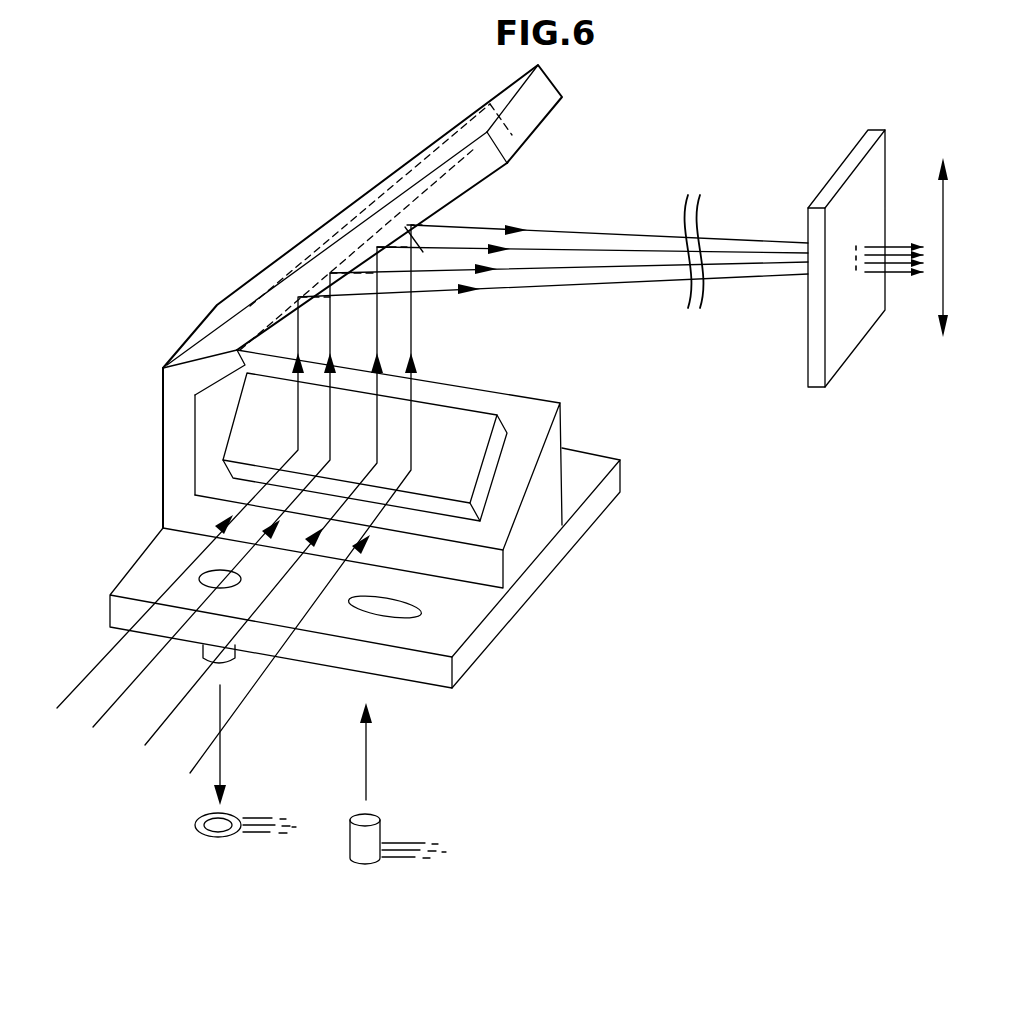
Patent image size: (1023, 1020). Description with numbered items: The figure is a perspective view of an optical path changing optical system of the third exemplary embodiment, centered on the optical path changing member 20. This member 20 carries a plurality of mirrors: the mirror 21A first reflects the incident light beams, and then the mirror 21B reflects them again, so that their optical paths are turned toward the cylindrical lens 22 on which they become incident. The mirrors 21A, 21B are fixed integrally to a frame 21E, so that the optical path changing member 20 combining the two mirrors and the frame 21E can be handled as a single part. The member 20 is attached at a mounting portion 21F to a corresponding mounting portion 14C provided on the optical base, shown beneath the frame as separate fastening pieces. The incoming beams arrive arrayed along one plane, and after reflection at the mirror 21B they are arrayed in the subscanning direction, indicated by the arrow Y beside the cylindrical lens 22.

The optical path changing member 20 is at (178, 175).
The mirror 21A is at (460, 430).
The mirror 21B is at (458, 218).
The frame 21E is at (547, 552).
The mounting portion 21F is at (267, 708).
The cylindrical lens 22 is at (850, 172).
The fixing members 14C is at (388, 872).
The direction Y is at (943, 217).